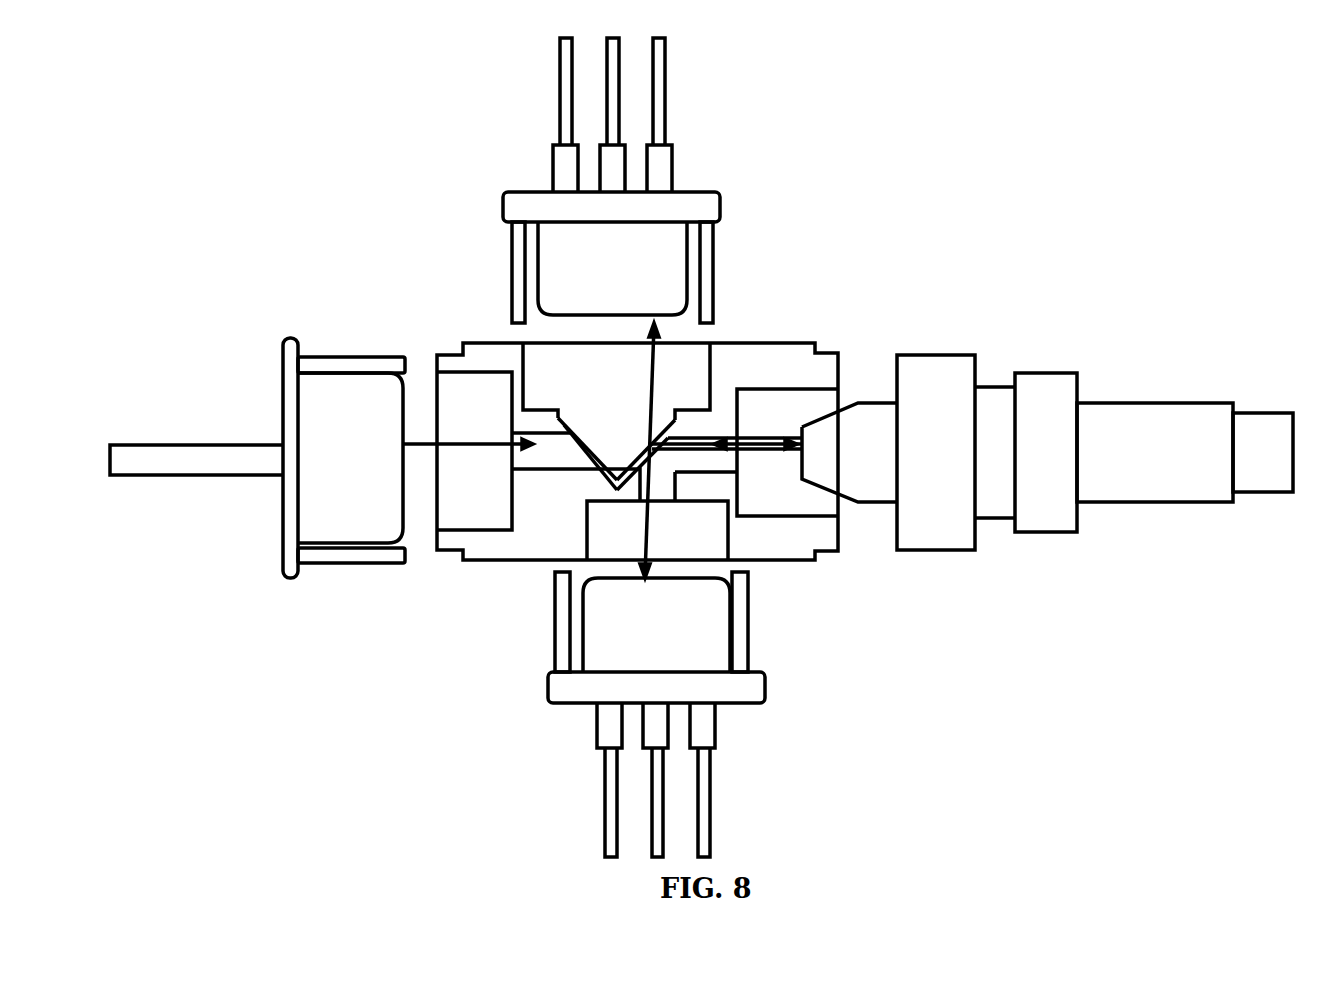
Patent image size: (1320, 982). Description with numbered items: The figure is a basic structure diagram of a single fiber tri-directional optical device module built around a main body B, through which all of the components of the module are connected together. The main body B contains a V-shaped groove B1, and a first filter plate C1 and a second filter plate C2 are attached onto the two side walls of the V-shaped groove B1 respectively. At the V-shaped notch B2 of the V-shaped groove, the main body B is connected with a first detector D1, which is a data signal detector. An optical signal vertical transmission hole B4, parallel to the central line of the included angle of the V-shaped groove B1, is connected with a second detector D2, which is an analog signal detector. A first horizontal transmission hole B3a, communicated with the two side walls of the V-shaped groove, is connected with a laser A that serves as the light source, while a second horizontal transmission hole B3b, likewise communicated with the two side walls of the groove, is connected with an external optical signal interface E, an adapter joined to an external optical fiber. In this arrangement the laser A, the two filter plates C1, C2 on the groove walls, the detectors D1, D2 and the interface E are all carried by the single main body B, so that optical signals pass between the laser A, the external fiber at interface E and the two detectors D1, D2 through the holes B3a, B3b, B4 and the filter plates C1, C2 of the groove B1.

The laser A is at (360, 410).
The main body B is at (778, 538).
The V-shaped groove B1 is at (650, 440).
The V-shaped notch B2 is at (523, 343).
The first horizontal transmission hole B3a is at (524, 445).
The second horizontal transmission hole B3b is at (708, 433).
The optical signal vertical transmission hole B4 is at (655, 482).
The first filter plate C1 is at (594, 447).
The second filter plate C2 is at (669, 416).
The first detector D1 is at (592, 270).
The second detector D2 is at (684, 652).
The external optical signal interface E is at (1048, 502).